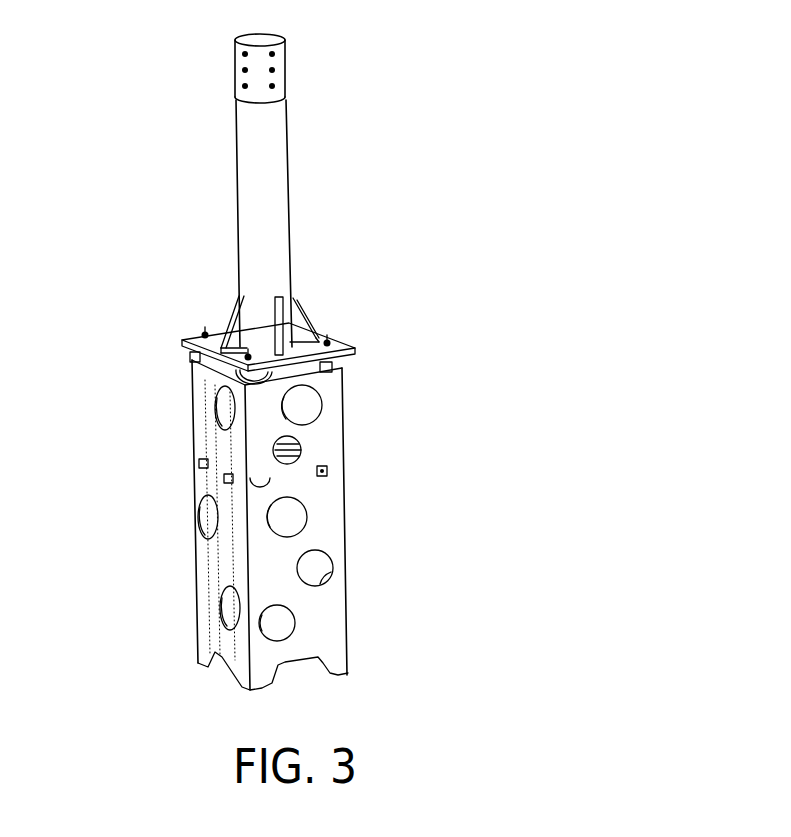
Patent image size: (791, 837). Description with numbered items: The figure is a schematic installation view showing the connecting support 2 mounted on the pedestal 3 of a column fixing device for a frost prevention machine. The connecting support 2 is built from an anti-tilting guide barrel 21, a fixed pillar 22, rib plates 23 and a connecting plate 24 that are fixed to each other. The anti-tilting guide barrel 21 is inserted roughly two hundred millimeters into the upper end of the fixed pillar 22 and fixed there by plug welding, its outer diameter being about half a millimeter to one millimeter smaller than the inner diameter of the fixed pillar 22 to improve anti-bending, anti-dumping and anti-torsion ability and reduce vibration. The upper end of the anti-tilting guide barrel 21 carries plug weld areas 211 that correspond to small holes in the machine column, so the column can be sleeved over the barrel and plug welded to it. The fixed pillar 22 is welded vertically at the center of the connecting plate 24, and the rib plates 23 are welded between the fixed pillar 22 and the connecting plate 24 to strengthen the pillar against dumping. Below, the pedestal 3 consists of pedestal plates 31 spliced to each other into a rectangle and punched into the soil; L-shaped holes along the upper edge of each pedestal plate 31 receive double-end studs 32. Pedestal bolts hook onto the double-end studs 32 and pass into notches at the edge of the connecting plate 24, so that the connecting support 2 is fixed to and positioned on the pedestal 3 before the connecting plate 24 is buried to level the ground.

The connecting support 2 is at (291, 172).
The anti-tilting guide barrel 21 is at (247, 72).
The plug weld areas 211 is at (276, 65).
The fixed pillar 22 is at (255, 188).
The rib plate 23 is at (285, 322).
The connecting plate 24 is at (303, 355).
The pedestal 3 is at (353, 524).
The pedestal plate 31 is at (215, 443).
The double-end stud 32 is at (330, 468).